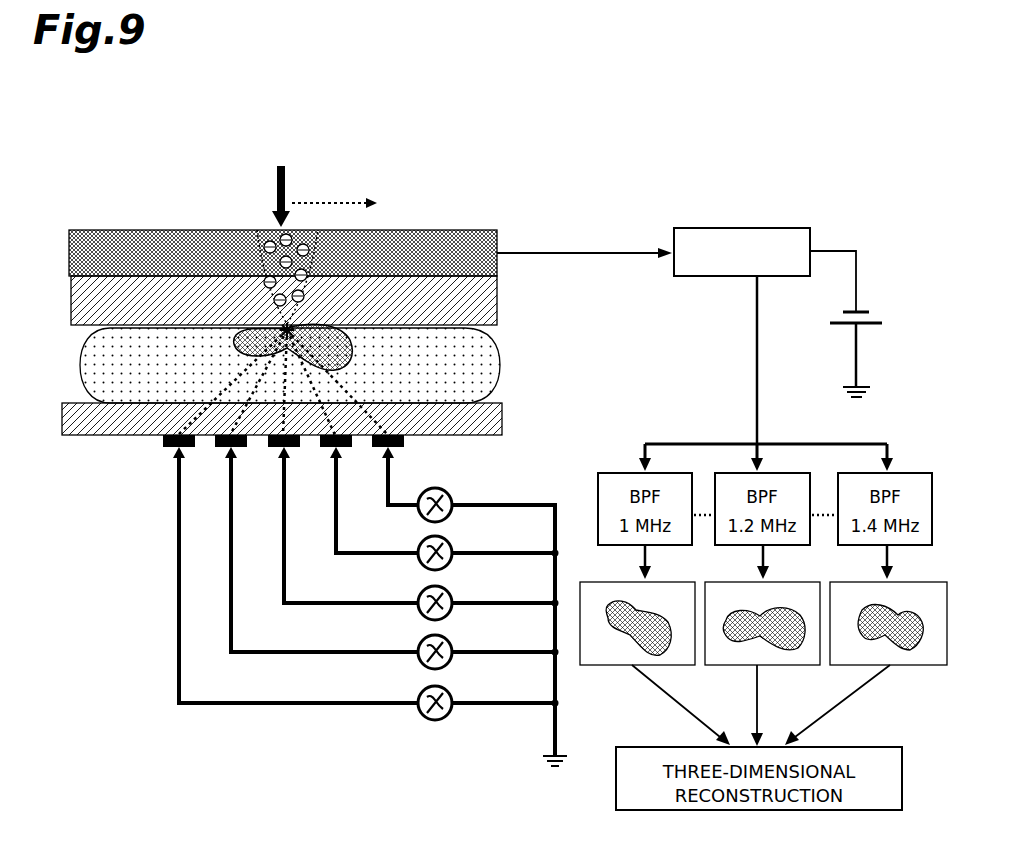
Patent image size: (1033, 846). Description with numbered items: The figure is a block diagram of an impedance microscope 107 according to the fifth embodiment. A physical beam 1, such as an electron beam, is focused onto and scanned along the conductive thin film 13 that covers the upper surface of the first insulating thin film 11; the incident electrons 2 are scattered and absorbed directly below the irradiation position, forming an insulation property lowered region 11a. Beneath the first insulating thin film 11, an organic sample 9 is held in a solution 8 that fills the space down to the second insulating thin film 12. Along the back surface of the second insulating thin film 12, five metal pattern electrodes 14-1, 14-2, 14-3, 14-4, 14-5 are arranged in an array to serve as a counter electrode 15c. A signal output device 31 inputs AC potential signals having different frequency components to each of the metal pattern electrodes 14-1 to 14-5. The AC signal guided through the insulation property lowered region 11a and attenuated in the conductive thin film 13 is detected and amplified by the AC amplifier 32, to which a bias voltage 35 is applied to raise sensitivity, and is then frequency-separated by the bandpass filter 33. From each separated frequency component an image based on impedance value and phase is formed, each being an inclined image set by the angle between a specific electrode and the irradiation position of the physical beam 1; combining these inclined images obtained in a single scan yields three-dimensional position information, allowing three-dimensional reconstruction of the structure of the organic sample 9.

The physical beam 1 is at (272, 180).
The incident electrons 2 is at (264, 240).
The solution 8 is at (80, 360).
The organic sample 9 is at (352, 348).
The first insulating thin film 11 is at (72, 297).
The insulation property lowered region 11a is at (348, 283).
The second insulating thin film 12 is at (88, 436).
The conductive thin film 13 is at (122, 230).
The metal pattern electrode 14-1 is at (376, 449).
The metal pattern electrode 14-2 is at (323, 449).
The metal pattern electrode 14-3 is at (271, 449).
The metal pattern electrode 14-4 is at (219, 449).
The metal pattern electrode 14-5 is at (165, 449).
The counter electrode 15c is at (332, 560).
The signal output device 31 is at (430, 750).
The AC amplifier 32 is at (742, 252).
The bandpass filter 33 is at (712, 416).
The bias voltage 35 is at (870, 325).
The impedance microscope 107 is at (653, 211).